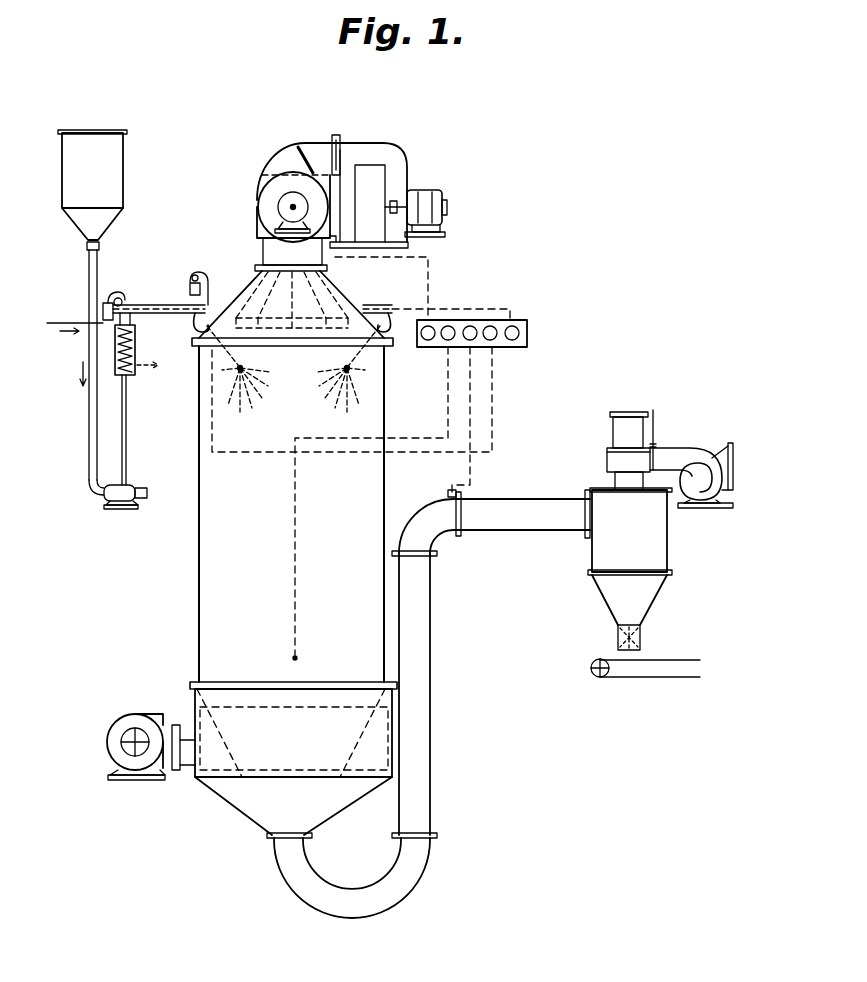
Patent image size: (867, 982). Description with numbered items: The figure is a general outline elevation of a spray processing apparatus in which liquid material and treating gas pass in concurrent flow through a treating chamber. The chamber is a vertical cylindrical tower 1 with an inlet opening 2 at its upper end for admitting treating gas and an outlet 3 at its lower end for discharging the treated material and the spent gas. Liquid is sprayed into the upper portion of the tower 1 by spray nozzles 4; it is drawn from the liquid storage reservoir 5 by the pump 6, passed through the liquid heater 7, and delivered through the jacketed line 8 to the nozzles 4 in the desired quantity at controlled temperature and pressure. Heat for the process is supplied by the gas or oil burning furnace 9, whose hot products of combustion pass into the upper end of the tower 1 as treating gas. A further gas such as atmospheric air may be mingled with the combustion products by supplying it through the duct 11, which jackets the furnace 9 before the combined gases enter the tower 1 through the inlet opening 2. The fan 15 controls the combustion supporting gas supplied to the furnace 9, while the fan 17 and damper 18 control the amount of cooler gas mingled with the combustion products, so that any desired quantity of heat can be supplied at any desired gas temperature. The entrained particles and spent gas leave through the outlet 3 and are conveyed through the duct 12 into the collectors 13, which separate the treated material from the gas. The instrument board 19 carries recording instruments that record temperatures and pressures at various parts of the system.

The vertical cylindrical tower 1 is at (208, 571).
The inlet opening 2 is at (270, 263).
The outlet 3 is at (276, 845).
The spray nozzles 4 is at (235, 372).
The liquid storage reservoir 5 is at (72, 193).
The pump 6 is at (122, 512).
The liquid heater 7 is at (133, 350).
The jacketed line 8 is at (170, 303).
The gas or oil burning furnace 9 is at (397, 178).
The duct 11 is at (318, 150).
The duct 12 is at (425, 800).
The collectors 13 is at (655, 548).
The fan 15 is at (405, 240).
The fan 17 is at (265, 185).
The damper 18 is at (340, 150).
The instrument board 19 is at (520, 320).